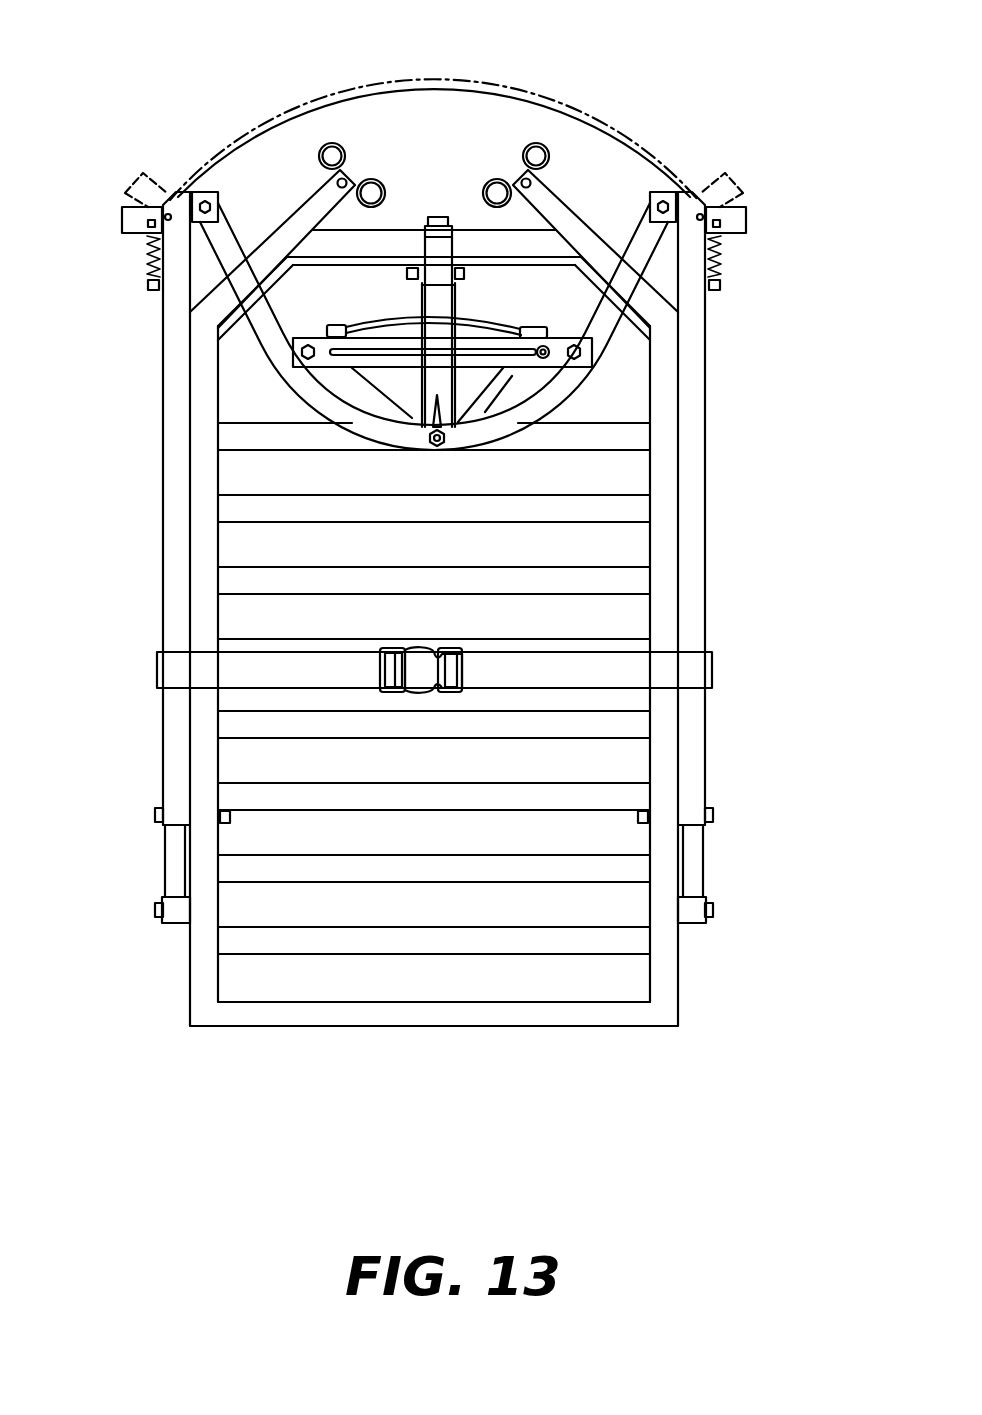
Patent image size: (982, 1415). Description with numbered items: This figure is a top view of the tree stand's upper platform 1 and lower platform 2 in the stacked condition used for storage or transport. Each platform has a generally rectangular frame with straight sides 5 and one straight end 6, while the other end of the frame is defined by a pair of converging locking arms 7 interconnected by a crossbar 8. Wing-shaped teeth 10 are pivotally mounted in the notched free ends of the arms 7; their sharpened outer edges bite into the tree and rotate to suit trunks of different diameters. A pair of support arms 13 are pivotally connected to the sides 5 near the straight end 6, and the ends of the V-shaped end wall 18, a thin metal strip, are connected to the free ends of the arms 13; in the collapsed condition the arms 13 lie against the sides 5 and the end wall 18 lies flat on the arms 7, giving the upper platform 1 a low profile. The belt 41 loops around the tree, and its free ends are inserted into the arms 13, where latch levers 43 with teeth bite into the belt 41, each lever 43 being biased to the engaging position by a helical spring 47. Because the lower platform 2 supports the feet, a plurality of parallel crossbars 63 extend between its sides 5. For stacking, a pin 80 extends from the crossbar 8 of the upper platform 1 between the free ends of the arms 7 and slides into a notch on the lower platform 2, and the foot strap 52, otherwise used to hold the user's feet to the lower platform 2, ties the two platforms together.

The upper platform 1 is at (150, 1060).
The lower platform 2 is at (722, 970).
The straight sides 5 is at (200, 555).
The straight end 6 is at (560, 1015).
The locking arms 7 is at (300, 222).
The crossbar 8 is at (528, 240).
The wing-shaped teeth 10 is at (335, 147).
The support arms 13 is at (172, 449).
The V-shaped end wall 18 is at (278, 323).
The belt 41 is at (213, 133).
The levers 43 is at (120, 217).
The helical spring 47 is at (145, 247).
The strap 52 is at (183, 663).
The crossbars 63 is at (615, 450).
The pin 80 is at (437, 215).